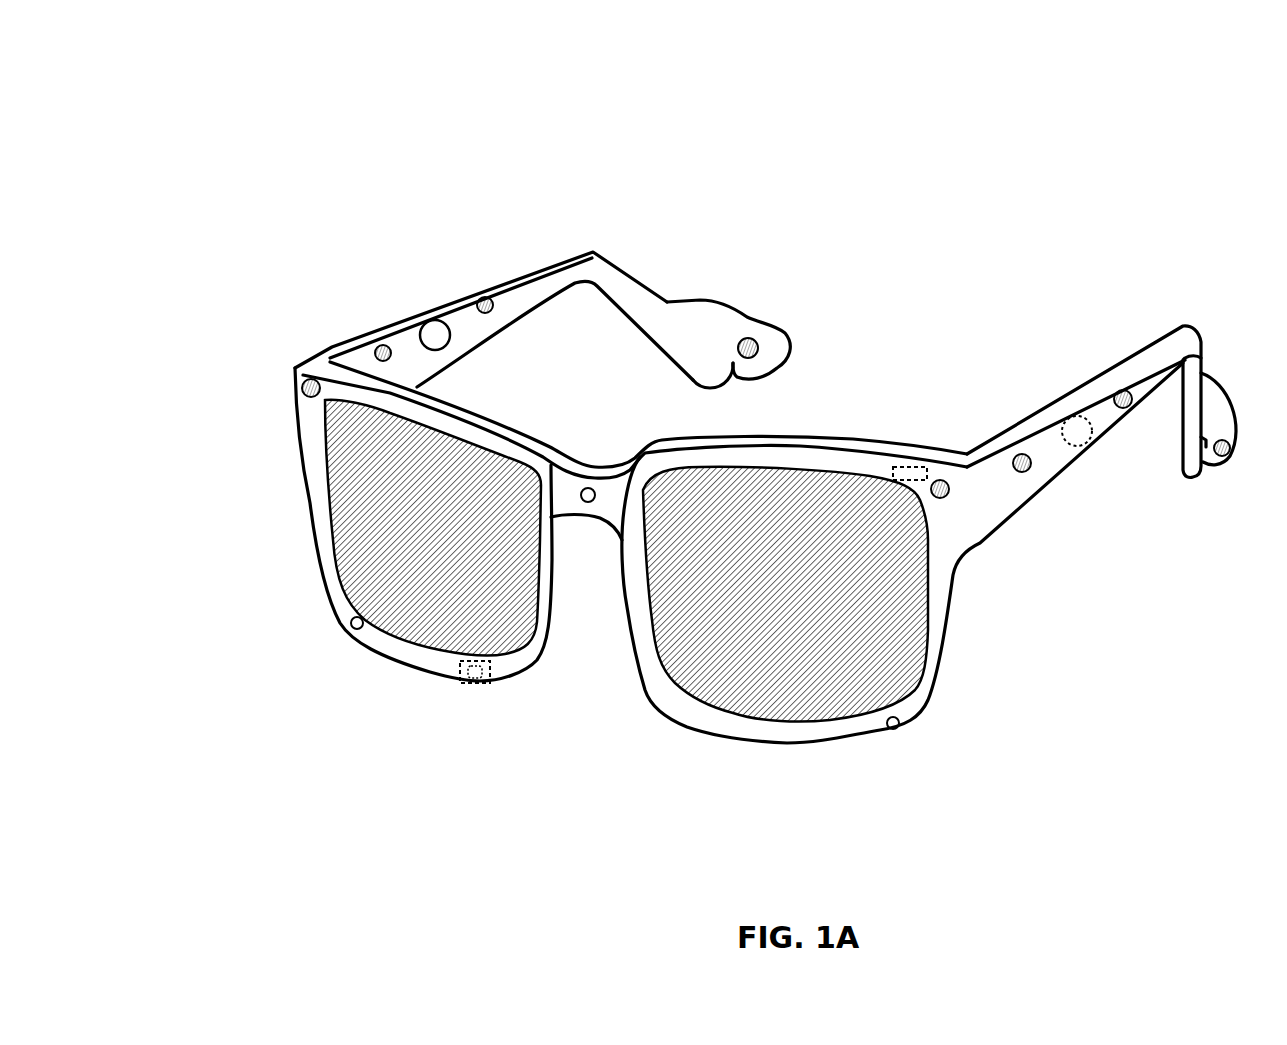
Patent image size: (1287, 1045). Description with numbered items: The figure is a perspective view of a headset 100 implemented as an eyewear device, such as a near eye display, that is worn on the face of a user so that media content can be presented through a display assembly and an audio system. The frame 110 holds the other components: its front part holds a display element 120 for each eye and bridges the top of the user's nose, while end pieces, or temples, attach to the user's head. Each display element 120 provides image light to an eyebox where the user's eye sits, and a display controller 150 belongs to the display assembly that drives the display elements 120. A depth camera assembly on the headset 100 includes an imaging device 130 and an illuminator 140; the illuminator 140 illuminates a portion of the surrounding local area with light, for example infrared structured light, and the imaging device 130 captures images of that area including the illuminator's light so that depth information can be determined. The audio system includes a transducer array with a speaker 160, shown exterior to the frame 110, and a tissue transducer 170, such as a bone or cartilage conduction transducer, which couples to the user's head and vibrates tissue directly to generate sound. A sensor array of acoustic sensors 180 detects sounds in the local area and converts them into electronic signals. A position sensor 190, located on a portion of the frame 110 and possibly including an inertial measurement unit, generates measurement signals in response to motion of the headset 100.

The headset 100 is at (191, 81).
The frame 110 is at (1183, 326).
The display element 120 is at (378, 529).
The imaging device 130 is at (352, 628).
The illuminator 140 is at (590, 502).
The display controller 150 is at (907, 467).
The speaker 160 is at (439, 320).
The tissue transducer 170 is at (707, 307).
The acoustic sensor 180 is at (312, 378).
The position sensor 190 is at (474, 679).